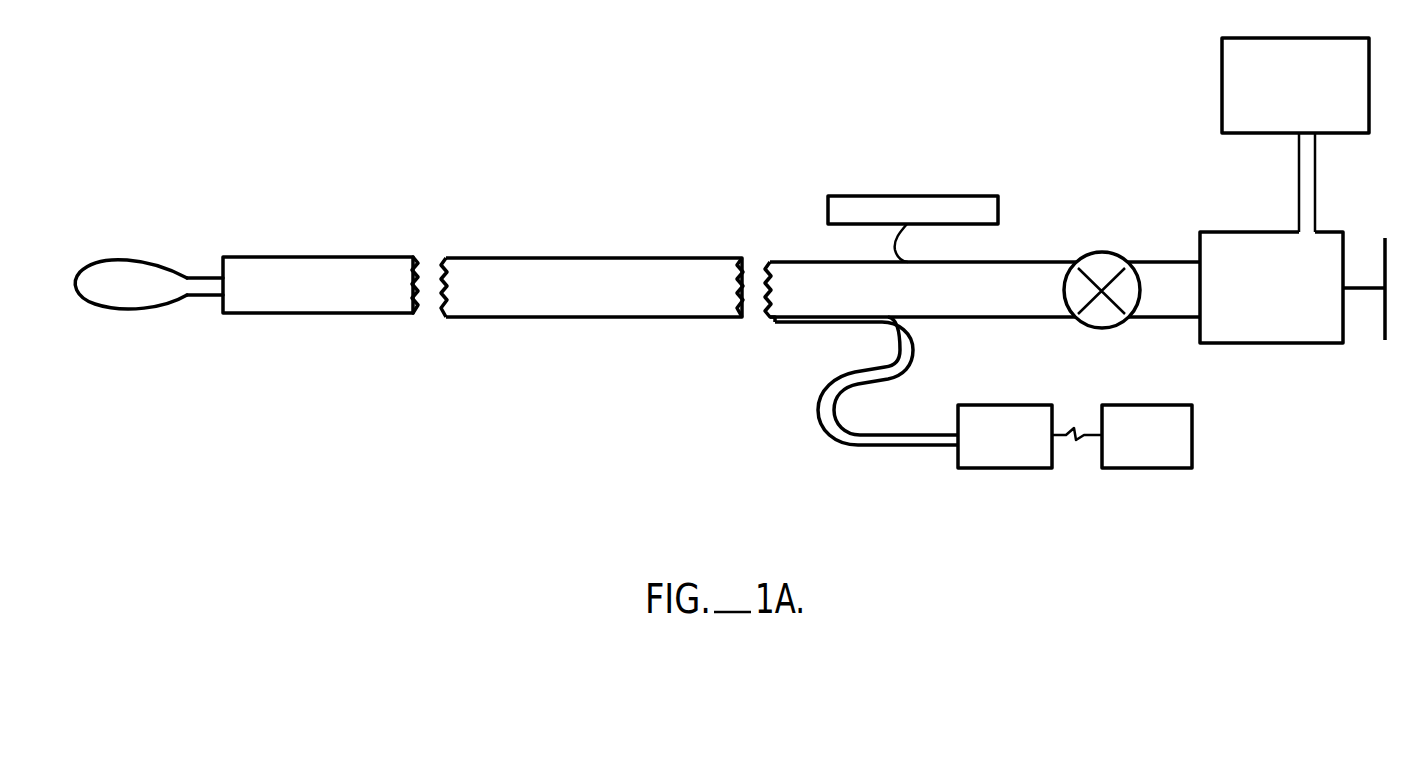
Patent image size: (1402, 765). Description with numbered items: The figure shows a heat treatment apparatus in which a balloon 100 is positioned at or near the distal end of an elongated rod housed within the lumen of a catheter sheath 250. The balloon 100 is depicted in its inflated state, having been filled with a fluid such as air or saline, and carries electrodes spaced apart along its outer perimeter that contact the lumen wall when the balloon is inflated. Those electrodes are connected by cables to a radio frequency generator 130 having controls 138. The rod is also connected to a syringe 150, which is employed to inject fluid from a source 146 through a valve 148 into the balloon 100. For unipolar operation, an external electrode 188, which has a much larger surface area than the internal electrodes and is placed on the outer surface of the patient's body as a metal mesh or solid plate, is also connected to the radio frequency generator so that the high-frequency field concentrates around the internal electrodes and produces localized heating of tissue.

The balloon 100 is at (148, 260).
The catheter sheath 250 is at (545, 257).
The external electrode 188 is at (893, 196).
The valve 148 is at (1098, 252).
The source 146 is at (1222, 86).
The syringe 150 is at (1260, 345).
The radio frequency generator 130 is at (1009, 462).
The controls 138 is at (1152, 462).